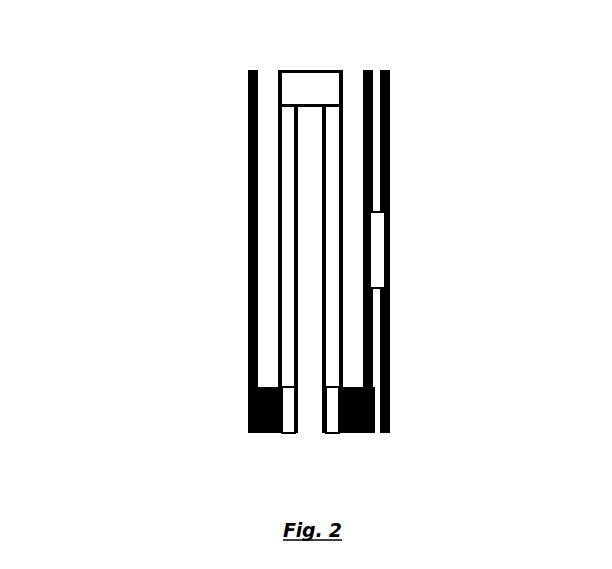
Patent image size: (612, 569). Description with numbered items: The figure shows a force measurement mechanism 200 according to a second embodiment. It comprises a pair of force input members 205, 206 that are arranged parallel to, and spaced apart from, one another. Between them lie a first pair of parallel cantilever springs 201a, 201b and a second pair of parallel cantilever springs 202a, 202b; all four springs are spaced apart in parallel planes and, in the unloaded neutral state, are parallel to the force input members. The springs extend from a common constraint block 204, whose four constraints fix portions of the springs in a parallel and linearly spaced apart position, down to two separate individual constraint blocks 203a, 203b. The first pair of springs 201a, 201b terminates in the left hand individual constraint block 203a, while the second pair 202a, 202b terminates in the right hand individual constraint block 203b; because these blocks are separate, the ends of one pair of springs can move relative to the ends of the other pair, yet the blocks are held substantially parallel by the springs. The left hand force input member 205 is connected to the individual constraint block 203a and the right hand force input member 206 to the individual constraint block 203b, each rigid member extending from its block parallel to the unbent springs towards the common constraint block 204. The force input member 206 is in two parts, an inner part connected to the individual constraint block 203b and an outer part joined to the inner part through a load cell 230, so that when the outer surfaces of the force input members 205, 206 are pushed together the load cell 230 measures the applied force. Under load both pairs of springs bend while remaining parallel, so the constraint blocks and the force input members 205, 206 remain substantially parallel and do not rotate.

The force measurement mechanism 200 is at (273, 251).
The cantilever spring 201a is at (295, 261).
The cantilever spring 201b is at (276, 172).
The cantilever spring 202a is at (326, 267).
The cantilever spring 202b is at (342, 137).
The individual constraint block 203a is at (287, 408).
The individual constraint block 203b is at (328, 413).
The common constraint block 204 is at (310, 87).
The force input member 205 is at (248, 338).
The force input member 206 is at (390, 320).
The load cell 230 is at (377, 250).